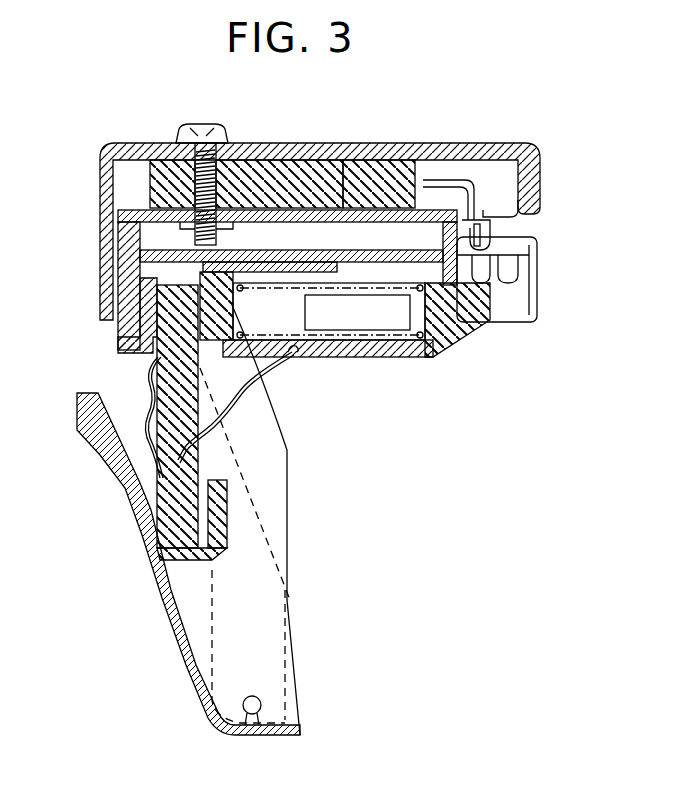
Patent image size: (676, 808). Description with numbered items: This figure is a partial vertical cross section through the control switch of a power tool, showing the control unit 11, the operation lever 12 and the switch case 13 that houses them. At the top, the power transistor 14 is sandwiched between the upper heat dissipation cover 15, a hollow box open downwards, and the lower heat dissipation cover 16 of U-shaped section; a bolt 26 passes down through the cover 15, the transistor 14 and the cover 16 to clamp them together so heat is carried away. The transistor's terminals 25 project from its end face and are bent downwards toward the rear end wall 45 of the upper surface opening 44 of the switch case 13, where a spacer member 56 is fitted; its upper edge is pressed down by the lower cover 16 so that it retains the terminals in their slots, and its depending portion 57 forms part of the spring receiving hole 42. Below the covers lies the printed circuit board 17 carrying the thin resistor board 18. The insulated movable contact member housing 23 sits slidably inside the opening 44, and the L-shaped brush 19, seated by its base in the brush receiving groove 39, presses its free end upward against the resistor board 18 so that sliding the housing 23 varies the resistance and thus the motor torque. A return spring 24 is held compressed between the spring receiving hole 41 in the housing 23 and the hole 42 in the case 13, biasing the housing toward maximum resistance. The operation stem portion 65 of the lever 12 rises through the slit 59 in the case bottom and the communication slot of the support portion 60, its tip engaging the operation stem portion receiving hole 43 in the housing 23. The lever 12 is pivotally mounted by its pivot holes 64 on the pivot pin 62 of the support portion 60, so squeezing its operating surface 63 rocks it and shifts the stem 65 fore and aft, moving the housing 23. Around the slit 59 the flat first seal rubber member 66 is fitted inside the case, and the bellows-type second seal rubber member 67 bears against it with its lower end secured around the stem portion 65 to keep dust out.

The control unit 11 is at (449, 172).
The operation lever 12 is at (113, 470).
The switch case 13 is at (530, 300).
The power transistor 14 is at (388, 185).
The upper heat dissipation cover 15 is at (532, 160).
The lower heat dissipation cover 16 is at (303, 200).
The printed circuit board 17 is at (250, 253).
The resistor board 18 is at (313, 263).
The brush 19 is at (152, 257).
The insulated movable contact member housing 23 is at (242, 352).
The return spring 24 is at (395, 345).
The terminals 25 is at (477, 195).
The bolt 26 is at (194, 133).
The brush receiving groove 39 is at (137, 304).
The spring receiving hole 41 is at (285, 358).
The spring receiving hole 42 is at (420, 330).
The operation stem portion receiving hole 43 is at (150, 328).
The upper surface opening 44 is at (375, 324).
The rear end wall 45 is at (483, 252).
The spacer member 56 is at (487, 220).
The depending portion 57 is at (503, 307).
The slit 59 is at (183, 390).
The support portion 60 is at (263, 486).
The pivot pin 62 is at (265, 737).
The operating surface 63 is at (158, 563).
The pivot holes 64 is at (232, 733).
The operation stem portion 65 is at (183, 425).
The first seal rubber member 66 is at (296, 350).
The second seal rubber member 67 is at (235, 420).